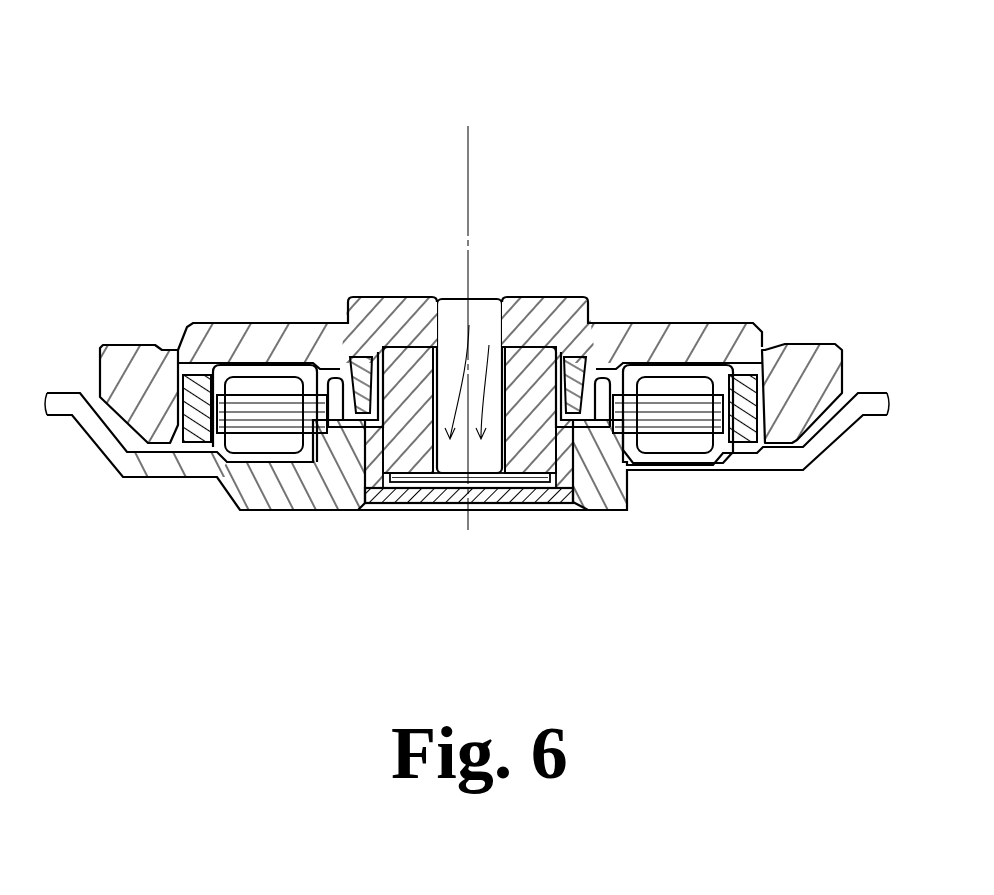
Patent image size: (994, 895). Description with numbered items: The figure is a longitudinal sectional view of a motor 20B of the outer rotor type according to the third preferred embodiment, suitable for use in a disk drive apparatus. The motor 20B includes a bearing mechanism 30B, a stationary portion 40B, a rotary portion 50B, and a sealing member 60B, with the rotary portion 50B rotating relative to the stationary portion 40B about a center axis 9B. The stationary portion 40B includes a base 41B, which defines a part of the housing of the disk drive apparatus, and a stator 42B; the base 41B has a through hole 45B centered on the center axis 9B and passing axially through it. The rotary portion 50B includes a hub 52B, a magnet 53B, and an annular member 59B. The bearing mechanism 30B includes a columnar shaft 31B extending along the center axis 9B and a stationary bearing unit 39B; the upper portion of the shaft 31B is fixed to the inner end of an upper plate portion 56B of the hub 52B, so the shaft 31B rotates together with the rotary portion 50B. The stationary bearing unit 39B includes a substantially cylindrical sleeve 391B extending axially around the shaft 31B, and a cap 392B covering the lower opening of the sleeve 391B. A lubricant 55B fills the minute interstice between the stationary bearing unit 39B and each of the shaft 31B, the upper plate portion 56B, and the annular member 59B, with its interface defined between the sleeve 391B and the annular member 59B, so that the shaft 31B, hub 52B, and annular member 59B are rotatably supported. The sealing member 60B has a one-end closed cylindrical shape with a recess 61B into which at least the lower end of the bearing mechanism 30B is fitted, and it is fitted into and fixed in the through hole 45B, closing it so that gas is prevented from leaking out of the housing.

The motor 20B is at (528, 130).
The center axis 9B is at (468, 148).
The upper plate portion 56B is at (381, 308).
The rotary portion 50B is at (282, 218).
The hub 52B is at (251, 337).
The magnet 53B is at (194, 375).
The annular member 59B is at (362, 356).
The stationary portion 40B is at (820, 235).
The base 41B is at (740, 462).
The stator 42B is at (678, 392).
The bearing mechanism 30B is at (553, 638).
The stationary bearing unit 39B is at (488, 599).
The sleeve 391B is at (388, 462).
The cap 392B is at (420, 482).
The shaft 31B is at (483, 478).
The sealing member 60B is at (560, 513).
The lubricant 55B is at (400, 362).
The recess 61B is at (489, 345).
The through hole 45B is at (510, 347).